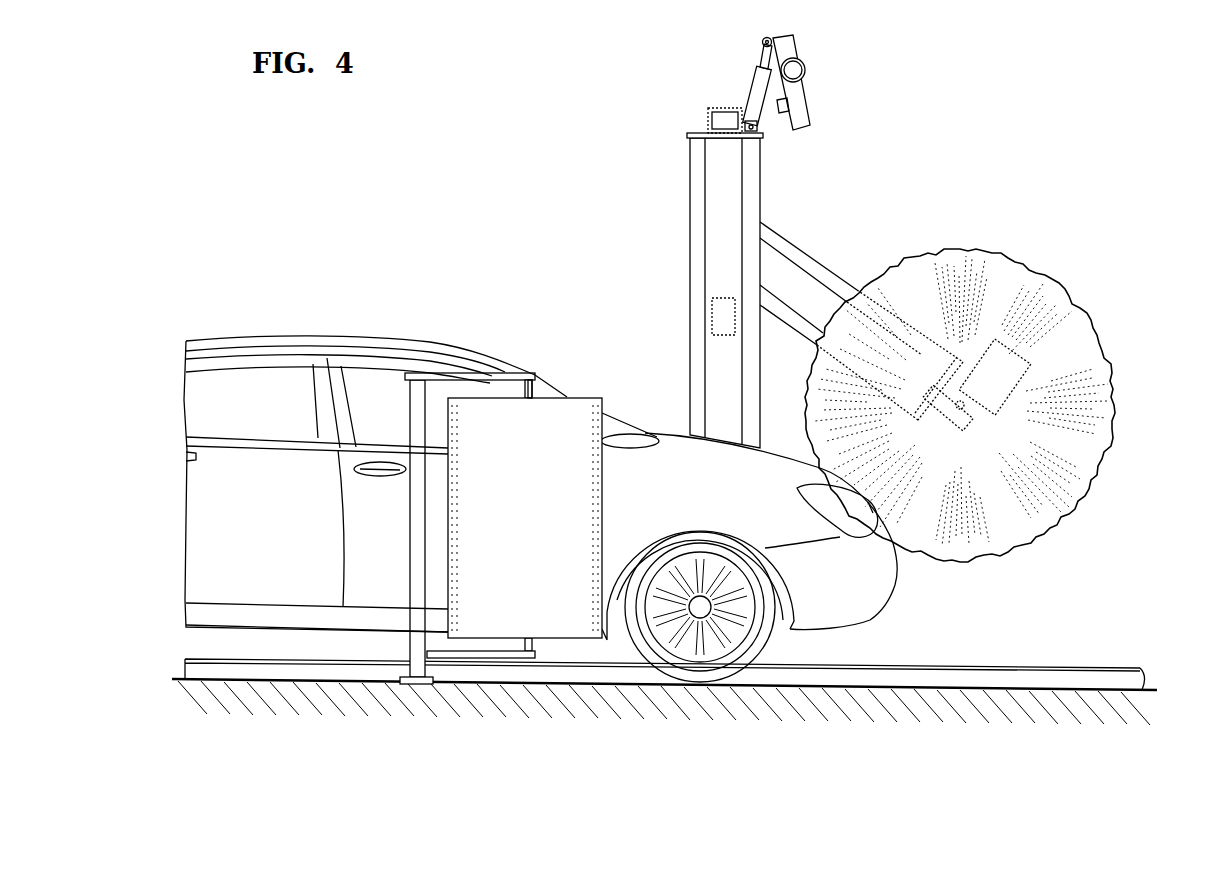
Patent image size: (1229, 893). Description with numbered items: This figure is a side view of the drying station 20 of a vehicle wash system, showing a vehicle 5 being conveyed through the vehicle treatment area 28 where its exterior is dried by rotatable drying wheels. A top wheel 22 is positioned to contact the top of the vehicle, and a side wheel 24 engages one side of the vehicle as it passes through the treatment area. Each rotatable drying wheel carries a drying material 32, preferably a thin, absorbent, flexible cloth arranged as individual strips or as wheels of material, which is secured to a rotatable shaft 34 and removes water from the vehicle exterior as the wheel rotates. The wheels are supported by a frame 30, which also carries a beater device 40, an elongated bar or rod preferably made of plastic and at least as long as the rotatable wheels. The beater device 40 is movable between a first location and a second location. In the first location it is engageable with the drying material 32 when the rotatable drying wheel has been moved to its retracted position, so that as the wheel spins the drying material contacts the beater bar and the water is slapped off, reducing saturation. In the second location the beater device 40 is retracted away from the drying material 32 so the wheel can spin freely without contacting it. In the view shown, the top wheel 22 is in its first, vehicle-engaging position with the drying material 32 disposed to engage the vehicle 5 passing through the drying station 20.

The vehicle 5 is at (847, 632).
The drying station 20 is at (640, 196).
The top wheel 22 is at (1090, 443).
The side wheel 24 is at (587, 398).
The vehicle treatment area 28 is at (614, 648).
The frame 30 is at (758, 165).
The drying material 32 is at (793, 356).
The rotatable shaft 34 is at (960, 412).
The beater device 40 is at (807, 88).